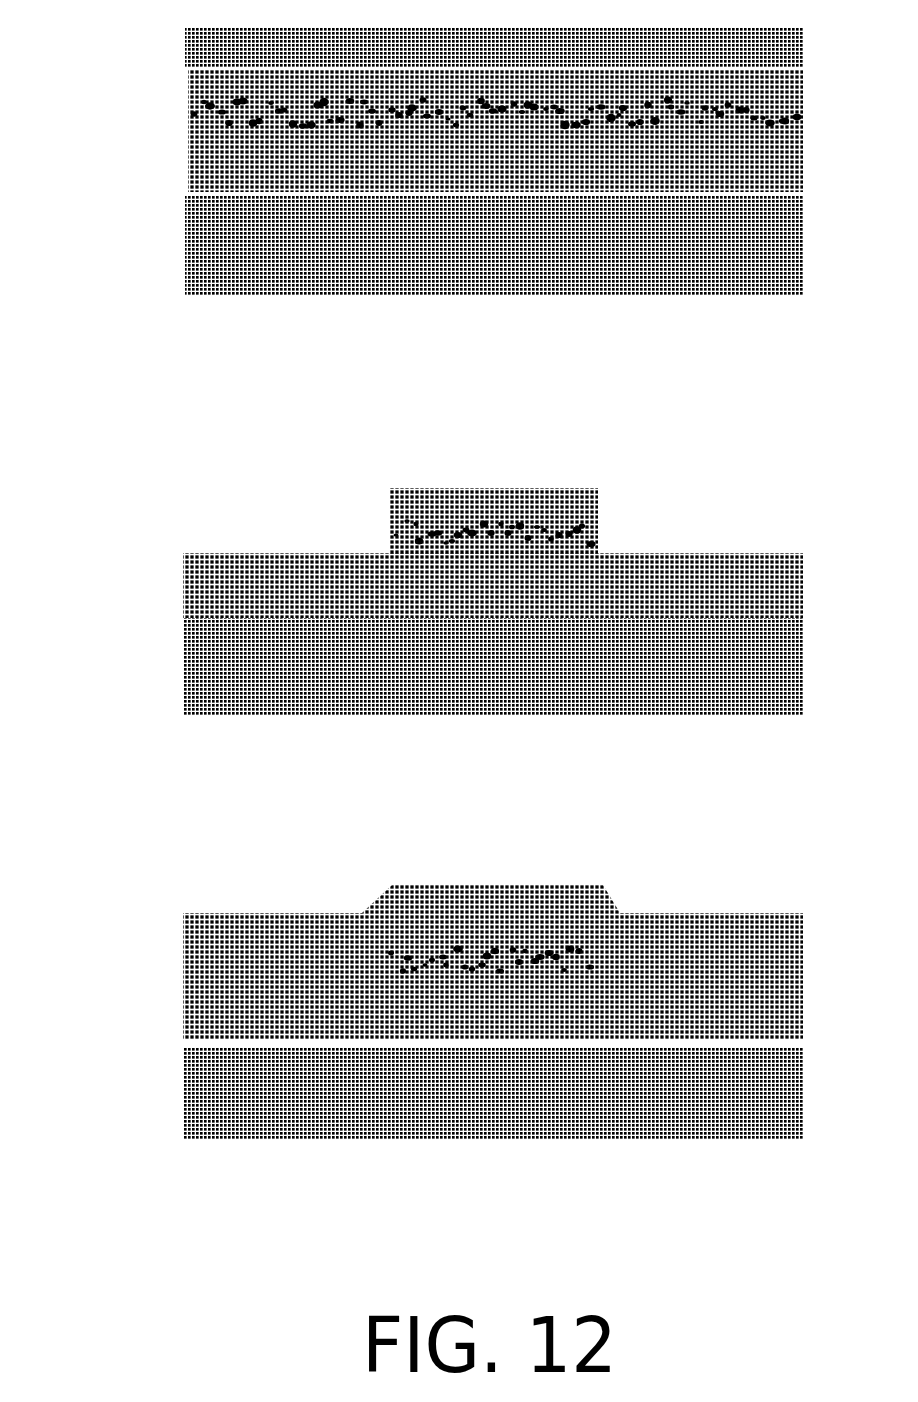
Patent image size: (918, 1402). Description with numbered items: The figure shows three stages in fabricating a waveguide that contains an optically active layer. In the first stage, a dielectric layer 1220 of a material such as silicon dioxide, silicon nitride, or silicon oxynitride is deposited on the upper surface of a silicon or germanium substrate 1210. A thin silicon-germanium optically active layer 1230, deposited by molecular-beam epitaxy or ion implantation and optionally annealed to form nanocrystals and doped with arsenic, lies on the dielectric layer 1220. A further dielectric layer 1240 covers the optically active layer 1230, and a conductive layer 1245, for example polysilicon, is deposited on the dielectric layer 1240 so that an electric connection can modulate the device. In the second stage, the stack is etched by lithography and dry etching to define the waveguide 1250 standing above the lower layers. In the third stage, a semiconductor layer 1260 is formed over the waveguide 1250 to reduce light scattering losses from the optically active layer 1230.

The substrate 1210 is at (154, 244).
The dielectric layer 1220 is at (154, 173).
The optically active layer 1230 is at (154, 123).
The dielectric layer 1240 is at (154, 84).
The conductive layer 1245 is at (154, 45).
The waveguide 1250 is at (390, 528).
The semiconductor layer 1260 is at (390, 885).